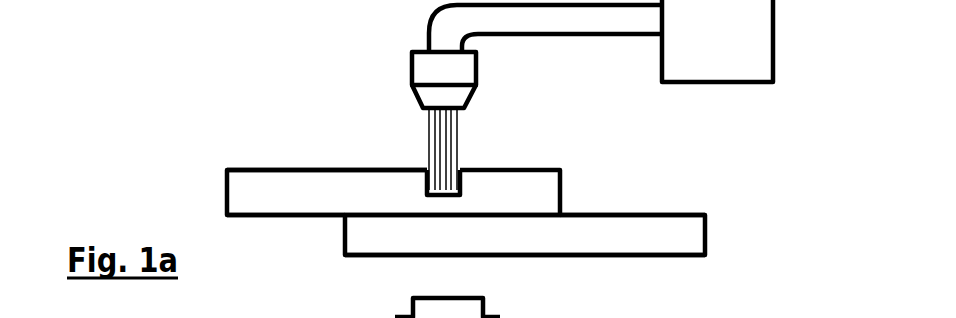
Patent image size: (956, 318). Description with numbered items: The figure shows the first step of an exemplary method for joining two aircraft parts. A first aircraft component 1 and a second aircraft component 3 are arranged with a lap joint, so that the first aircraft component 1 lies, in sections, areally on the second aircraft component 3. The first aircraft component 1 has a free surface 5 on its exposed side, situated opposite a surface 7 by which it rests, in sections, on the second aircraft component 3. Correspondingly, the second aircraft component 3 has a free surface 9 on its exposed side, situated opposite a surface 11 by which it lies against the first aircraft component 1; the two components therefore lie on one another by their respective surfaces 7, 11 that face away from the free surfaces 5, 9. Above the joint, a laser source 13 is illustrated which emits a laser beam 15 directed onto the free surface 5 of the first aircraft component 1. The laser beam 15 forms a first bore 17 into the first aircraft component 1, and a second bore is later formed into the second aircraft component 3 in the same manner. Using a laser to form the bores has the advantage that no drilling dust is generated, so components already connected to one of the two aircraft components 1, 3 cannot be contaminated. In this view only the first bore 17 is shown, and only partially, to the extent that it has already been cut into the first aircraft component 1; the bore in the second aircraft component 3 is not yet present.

The first aircraft component 1 is at (256, 210).
The second aircraft component 3 is at (689, 248).
The free surface 5 is at (235, 170).
The surface 7 is at (253, 218).
The free surface 9 is at (627, 258).
The surface 11 is at (652, 213).
The laser source 13 is at (733, 49).
The laser beam 15 is at (458, 133).
The first bore 17 is at (425, 168).